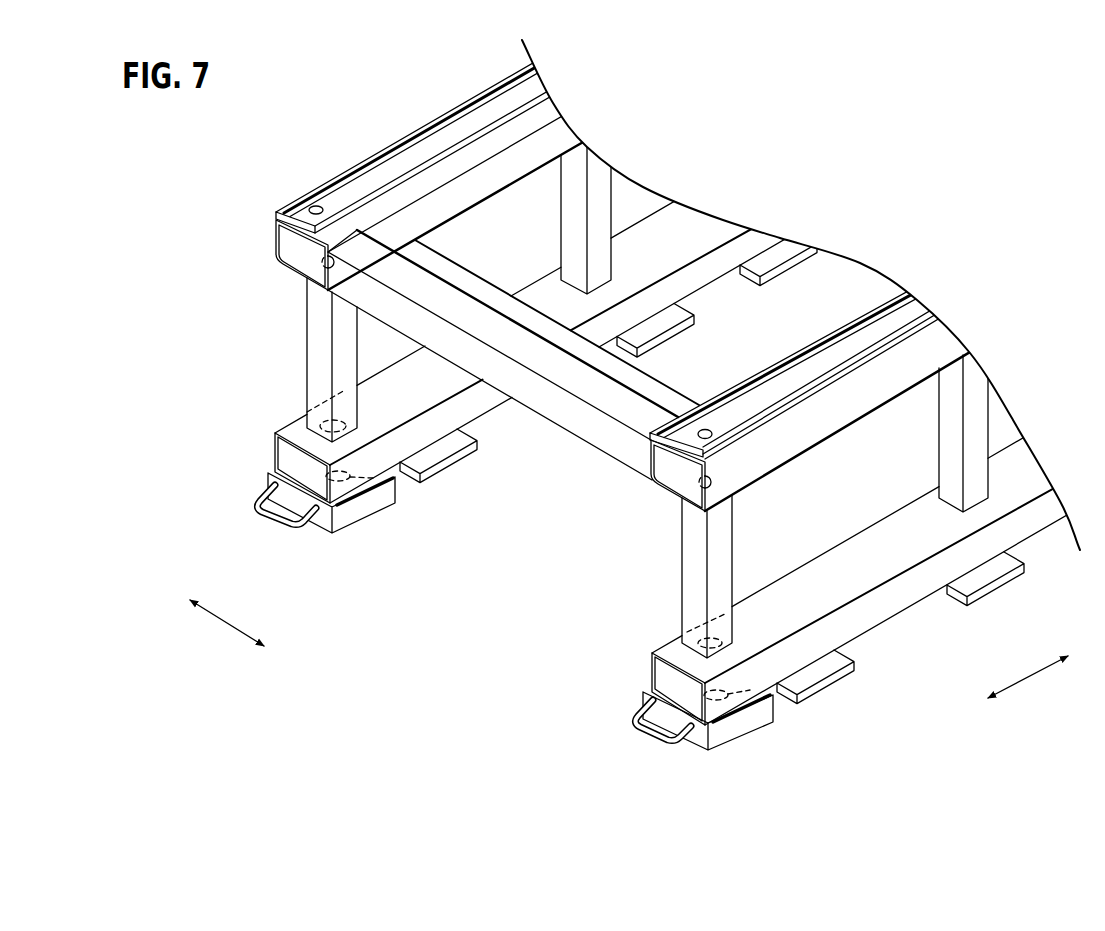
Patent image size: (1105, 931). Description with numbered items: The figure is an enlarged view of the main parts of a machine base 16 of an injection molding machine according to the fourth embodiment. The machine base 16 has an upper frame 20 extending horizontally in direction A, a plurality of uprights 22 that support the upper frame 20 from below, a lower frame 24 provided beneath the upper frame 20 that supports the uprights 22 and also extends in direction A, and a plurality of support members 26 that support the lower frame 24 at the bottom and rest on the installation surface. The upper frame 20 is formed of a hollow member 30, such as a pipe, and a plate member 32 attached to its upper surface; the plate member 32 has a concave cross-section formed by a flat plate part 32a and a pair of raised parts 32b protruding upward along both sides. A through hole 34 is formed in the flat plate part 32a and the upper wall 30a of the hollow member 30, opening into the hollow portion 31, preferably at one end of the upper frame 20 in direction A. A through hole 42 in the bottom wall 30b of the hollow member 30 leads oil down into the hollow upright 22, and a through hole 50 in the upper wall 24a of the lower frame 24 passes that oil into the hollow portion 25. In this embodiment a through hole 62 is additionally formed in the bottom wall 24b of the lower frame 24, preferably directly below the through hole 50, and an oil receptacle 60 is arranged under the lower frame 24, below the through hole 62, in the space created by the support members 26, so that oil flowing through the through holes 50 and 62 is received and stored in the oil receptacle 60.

The machine base 16 is at (194, 144).
The upper frame 20 is at (398, 96).
The upright 22 is at (320, 370).
The lower frame 24 is at (497, 410).
The upper wall of the lower frame 24a is at (379, 392).
The bottom wall of the lower frame 24b is at (307, 480).
The hollow portion of the lower frame 25 is at (283, 455).
The support member 26 is at (445, 455).
The hollow member 30 is at (437, 182).
The upper wall of the hollow member 30a is at (548, 117).
The bottom wall of the hollow member 30b is at (293, 258).
The hollow portion of the hollow member 31 is at (289, 240).
The plate member 32 is at (353, 180).
The flat plate part 32a is at (500, 107).
The raised part 32b is at (540, 95).
The through hole 34 is at (317, 205).
The through hole 42 is at (320, 262).
The through hole 50 is at (375, 399).
The oil receptacle 60 is at (354, 510).
The through hole 62 is at (384, 493).